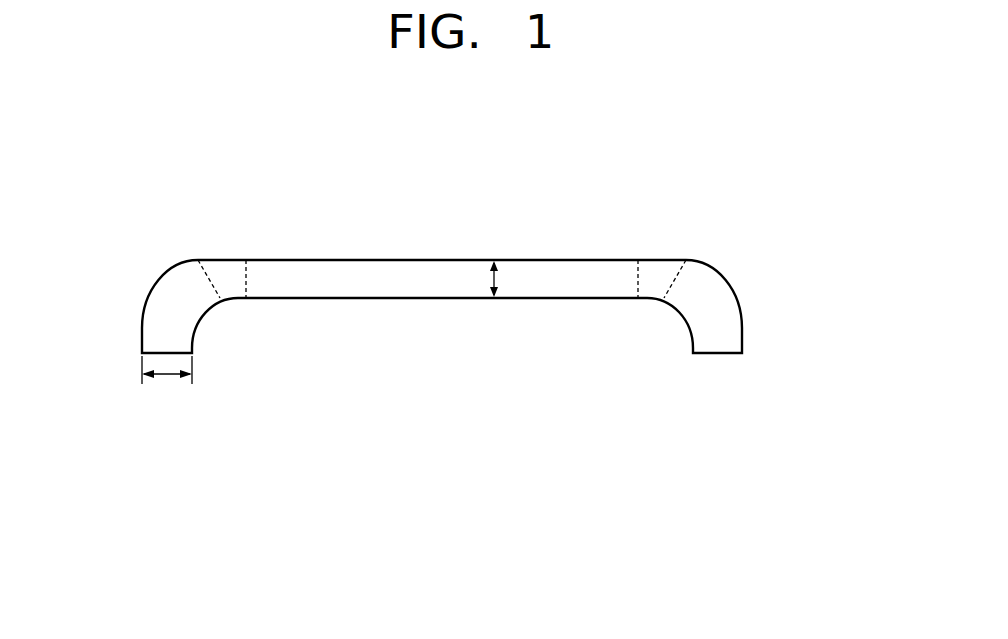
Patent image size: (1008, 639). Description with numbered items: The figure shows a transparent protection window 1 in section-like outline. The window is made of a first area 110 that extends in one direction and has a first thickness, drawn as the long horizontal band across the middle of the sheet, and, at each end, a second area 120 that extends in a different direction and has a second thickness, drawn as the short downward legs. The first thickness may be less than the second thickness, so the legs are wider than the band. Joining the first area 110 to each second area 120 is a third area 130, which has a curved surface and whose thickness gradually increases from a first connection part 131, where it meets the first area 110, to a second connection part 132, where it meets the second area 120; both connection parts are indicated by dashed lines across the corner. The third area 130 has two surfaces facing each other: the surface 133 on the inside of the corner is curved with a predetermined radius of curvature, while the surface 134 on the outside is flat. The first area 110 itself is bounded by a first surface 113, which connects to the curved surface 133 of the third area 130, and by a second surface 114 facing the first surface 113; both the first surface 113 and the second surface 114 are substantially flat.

The transparent protection window 1 is at (752, 165).
The first area 110 is at (442, 273).
The first surface 113 is at (578, 300).
The second surface 114 is at (574, 258).
The second area 120 is at (150, 337).
The third area 130 is at (398, 273).
The first connection part 131 is at (248, 273).
The second connection part 132 is at (203, 277).
The curved surface 133 is at (233, 299).
The flat surface 134 is at (212, 260).